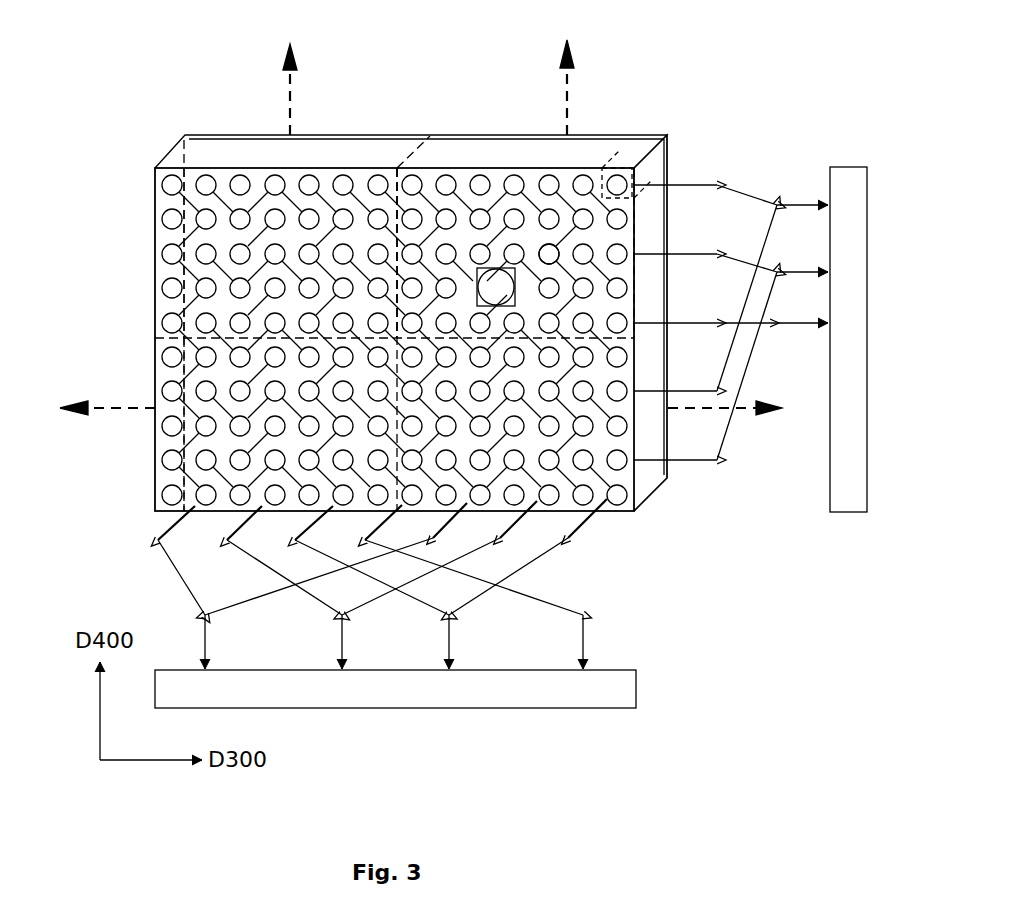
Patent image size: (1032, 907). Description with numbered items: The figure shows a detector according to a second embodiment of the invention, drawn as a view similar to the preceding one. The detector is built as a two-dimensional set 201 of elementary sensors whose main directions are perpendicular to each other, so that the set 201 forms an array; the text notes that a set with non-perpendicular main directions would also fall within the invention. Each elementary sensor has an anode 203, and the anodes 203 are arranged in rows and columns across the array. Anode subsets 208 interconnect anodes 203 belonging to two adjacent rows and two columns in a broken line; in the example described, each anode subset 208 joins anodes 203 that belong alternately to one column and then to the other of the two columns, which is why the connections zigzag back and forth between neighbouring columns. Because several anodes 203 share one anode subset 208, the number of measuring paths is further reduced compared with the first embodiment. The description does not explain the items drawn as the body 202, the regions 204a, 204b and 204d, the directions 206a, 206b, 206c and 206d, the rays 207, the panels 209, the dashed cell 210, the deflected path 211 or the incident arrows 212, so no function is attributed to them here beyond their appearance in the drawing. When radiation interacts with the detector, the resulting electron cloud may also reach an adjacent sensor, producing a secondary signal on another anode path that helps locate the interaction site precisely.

The two-dimensional set 201 is at (148, 136).
The light guide plate body 202 is at (657, 470).
The anode 203 is at (554, 242).
The first region 204a is at (352, 150).
The second region 204b is at (465, 158).
The fourth region 204d is at (153, 437).
The emission direction a 206a is at (288, 88).
The emission direction b 206b is at (563, 80).
The emission direction c 206c is at (740, 410).
The emission direction d 206d is at (102, 407).
The emitted light rays 207 is at (690, 462).
The anode subset 208 is at (522, 518).
The light receiving panel 209 is at (847, 180).
The unit cell 210 is at (637, 152).
The deflected light path 211 is at (792, 272).
The incident light to panel 212 is at (203, 630).